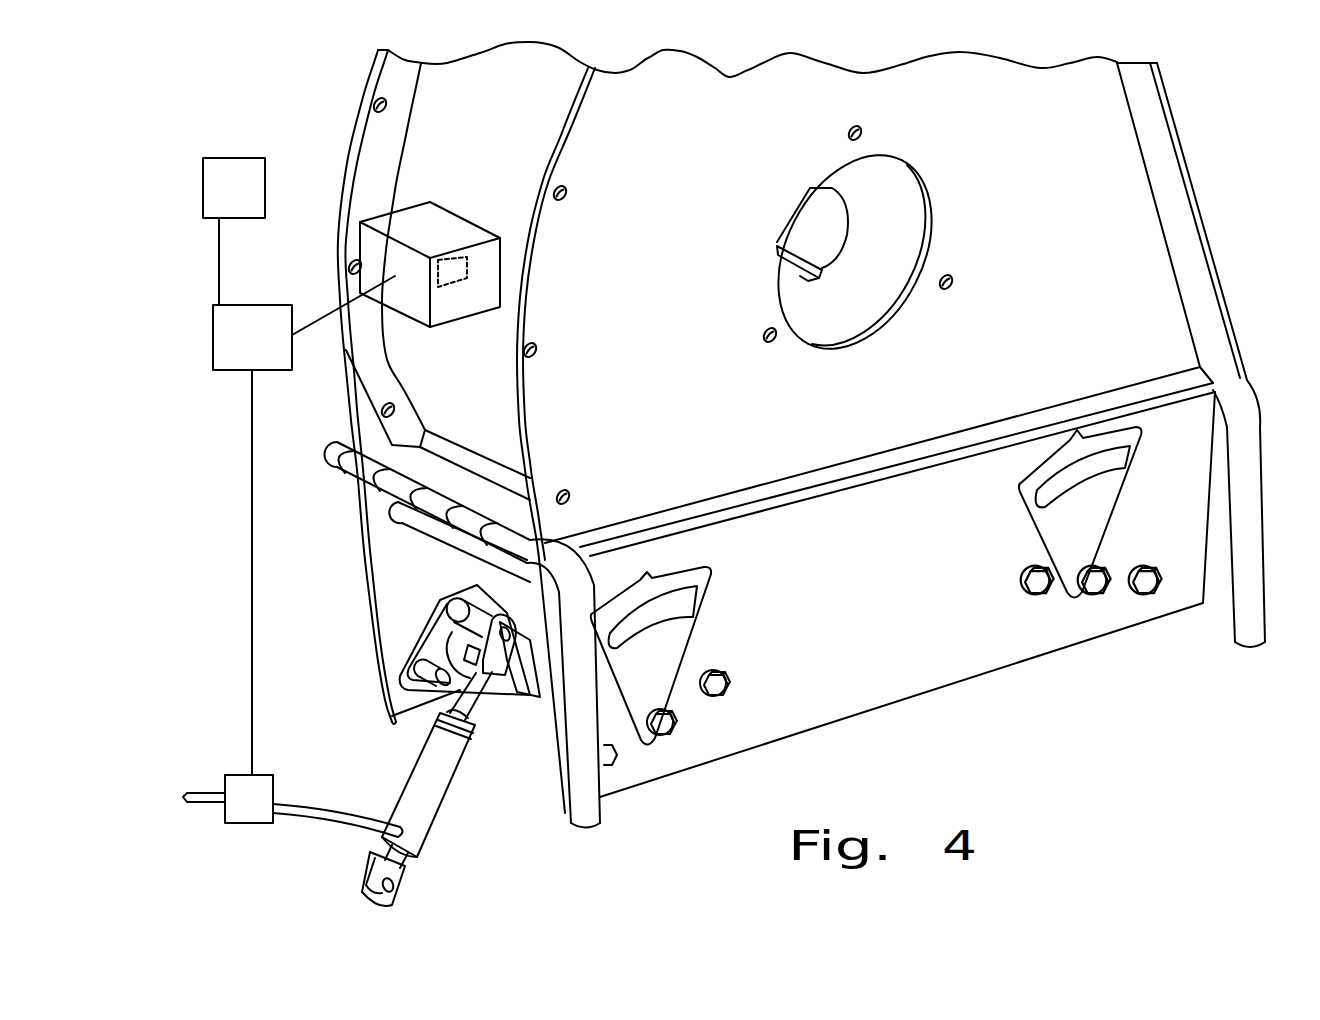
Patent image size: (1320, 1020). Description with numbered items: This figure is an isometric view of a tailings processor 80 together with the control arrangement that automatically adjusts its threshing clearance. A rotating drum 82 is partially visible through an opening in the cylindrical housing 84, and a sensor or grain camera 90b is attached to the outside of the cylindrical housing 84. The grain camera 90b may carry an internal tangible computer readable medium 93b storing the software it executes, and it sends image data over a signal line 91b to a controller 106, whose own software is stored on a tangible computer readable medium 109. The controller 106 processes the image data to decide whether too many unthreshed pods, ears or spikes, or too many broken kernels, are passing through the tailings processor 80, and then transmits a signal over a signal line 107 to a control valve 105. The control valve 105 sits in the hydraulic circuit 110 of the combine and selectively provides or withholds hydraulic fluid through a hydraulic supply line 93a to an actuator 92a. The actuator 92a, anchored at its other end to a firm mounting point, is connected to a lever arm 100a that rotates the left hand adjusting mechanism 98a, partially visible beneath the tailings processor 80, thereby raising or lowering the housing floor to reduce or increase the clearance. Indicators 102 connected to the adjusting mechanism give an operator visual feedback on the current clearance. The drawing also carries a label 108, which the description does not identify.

The tailings processor 80 is at (730, 212).
The rotating drum 82 is at (900, 213).
The cylindrical housing 84 is at (455, 112).
The sensor or grain camera 90b is at (437, 230).
The signal line 91b is at (318, 319).
The internal tangible computer readable medium 93b is at (467, 280).
The controller 106 is at (248, 360).
The tangible computer readable medium 109 is at (255, 168).
The signal line 107 is at (252, 592).
The control valve 105 is at (243, 797).
The hydraulic circuit 110 is at (195, 802).
The hydraulic supply line 93a is at (340, 818).
The actuator assembly 108 is at (392, 736).
The actuator 92a is at (428, 802).
The left hand adjusting mechanism 98a is at (532, 697).
The lever arm 100a is at (457, 610).
The indicator 102 is at (690, 625).